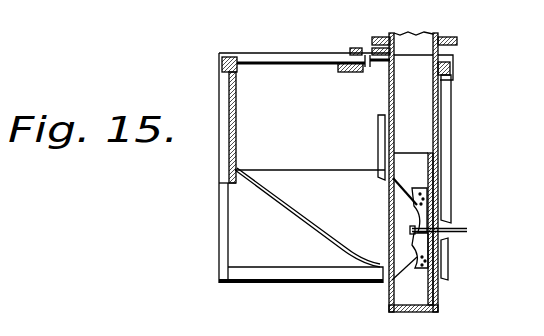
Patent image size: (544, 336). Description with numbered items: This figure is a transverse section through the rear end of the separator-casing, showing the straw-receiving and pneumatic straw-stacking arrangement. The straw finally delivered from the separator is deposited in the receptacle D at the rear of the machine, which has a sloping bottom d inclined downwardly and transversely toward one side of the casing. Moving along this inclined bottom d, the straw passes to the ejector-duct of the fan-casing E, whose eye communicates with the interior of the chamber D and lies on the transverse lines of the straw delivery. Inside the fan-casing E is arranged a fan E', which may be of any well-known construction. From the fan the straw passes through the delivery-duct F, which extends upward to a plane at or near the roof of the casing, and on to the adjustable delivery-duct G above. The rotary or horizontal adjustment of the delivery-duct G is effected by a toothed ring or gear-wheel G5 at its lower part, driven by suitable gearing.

The receptacle D is at (304, 165).
The sloping bottom d is at (301, 228).
The fan-casing E is at (396, 184).
The fan E' is at (446, 246).
The delivery-duct F is at (440, 177).
The delivery-duct G is at (399, 33).
The toothed ring or gear-wheel G5 is at (457, 41).